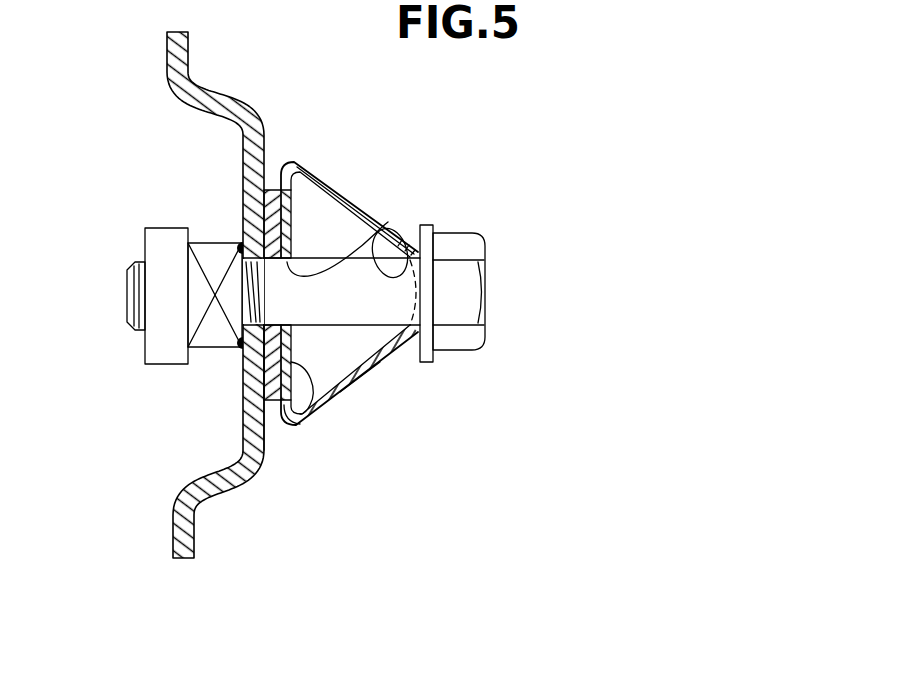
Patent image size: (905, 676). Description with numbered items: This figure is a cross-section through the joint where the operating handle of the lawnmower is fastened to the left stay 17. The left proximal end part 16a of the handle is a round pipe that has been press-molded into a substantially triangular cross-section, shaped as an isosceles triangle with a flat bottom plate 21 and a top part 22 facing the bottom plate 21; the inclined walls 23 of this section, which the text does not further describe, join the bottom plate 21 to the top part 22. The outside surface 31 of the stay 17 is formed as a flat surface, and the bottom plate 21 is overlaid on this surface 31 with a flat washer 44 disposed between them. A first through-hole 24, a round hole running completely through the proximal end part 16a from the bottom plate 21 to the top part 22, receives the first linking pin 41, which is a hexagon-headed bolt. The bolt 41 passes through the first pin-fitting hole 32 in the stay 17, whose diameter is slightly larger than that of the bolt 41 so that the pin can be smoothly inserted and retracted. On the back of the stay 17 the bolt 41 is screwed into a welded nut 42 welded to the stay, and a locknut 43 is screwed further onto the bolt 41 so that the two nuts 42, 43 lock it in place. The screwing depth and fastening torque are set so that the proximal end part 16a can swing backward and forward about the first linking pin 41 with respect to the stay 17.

The left proximal end part 16a is at (381, 388).
The left stay 17 is at (170, 530).
The bottom plate 21 is at (312, 408).
The top part 22 is at (433, 292).
The cup-shaped member 23 is at (330, 185).
The first through-hole 24 is at (388, 222).
The surface 31 is at (266, 430).
The first pin-fitting hole 32 is at (238, 330).
The first linking pin 41 is at (467, 283).
The welded nut 42 is at (215, 250).
The locknut 43 is at (152, 250).
The flat washer 44 is at (268, 192).